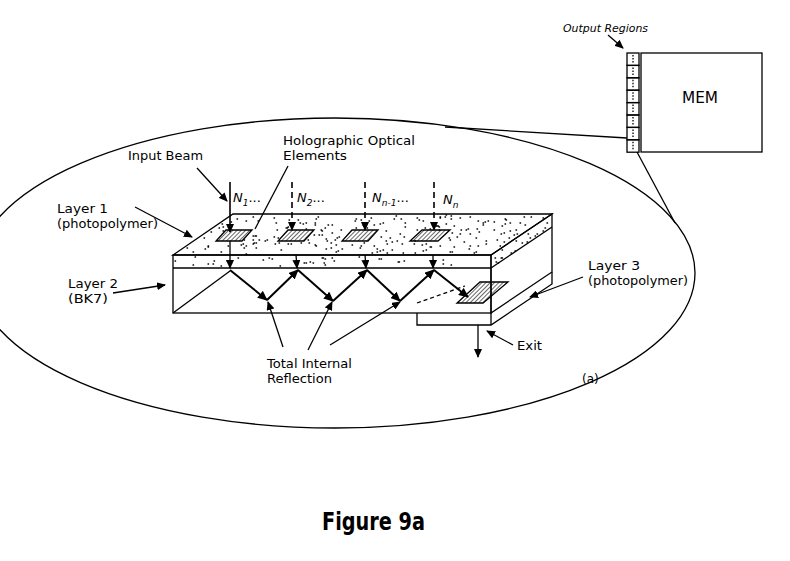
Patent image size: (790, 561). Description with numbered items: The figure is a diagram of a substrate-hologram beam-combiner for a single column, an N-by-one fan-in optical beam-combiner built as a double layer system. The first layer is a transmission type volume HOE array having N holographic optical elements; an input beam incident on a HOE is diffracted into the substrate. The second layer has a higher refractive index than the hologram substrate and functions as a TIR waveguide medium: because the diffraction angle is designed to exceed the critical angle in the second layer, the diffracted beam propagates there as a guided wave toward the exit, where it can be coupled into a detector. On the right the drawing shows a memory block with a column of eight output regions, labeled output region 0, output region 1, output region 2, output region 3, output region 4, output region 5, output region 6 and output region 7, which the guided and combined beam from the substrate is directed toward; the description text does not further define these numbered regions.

The output region 0 is at (627, 146).
The output region 1 is at (627, 133).
The output region 2 is at (627, 121).
The output region 3 is at (627, 109).
The output region 4 is at (627, 96).
The output region 5 is at (627, 84).
The output region 6 is at (627, 71).
The output region 7 is at (627, 59).